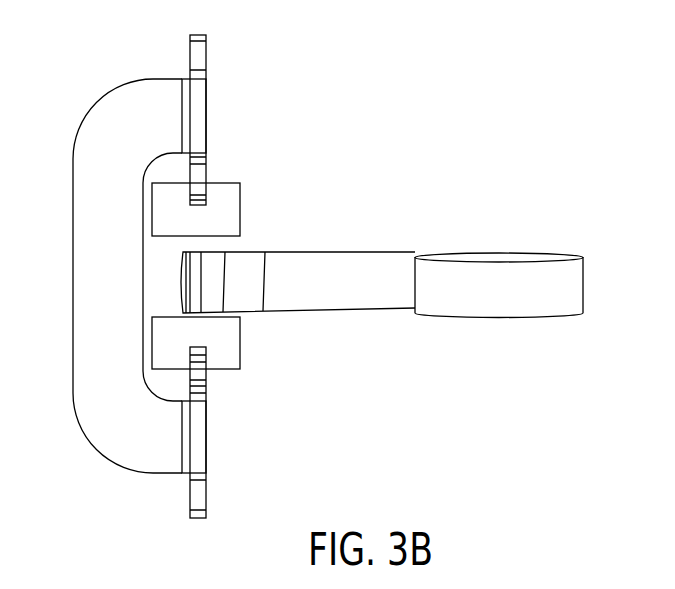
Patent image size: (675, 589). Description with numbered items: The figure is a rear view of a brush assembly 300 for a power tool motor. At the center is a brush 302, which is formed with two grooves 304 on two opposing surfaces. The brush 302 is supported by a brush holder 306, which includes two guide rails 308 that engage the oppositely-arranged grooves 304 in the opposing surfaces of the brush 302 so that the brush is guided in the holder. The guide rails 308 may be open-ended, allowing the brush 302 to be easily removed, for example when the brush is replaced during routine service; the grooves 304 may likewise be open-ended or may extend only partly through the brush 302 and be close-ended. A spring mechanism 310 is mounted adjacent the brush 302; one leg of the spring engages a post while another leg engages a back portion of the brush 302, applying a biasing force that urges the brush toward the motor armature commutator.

The brush assembly 300 is at (315, 259).
The brush 302 is at (213, 340).
The grooves 304 is at (212, 202).
The brush holder 306 is at (92, 65).
The guide rails 308 is at (198, 182).
The spring mechanism 310 is at (507, 282).